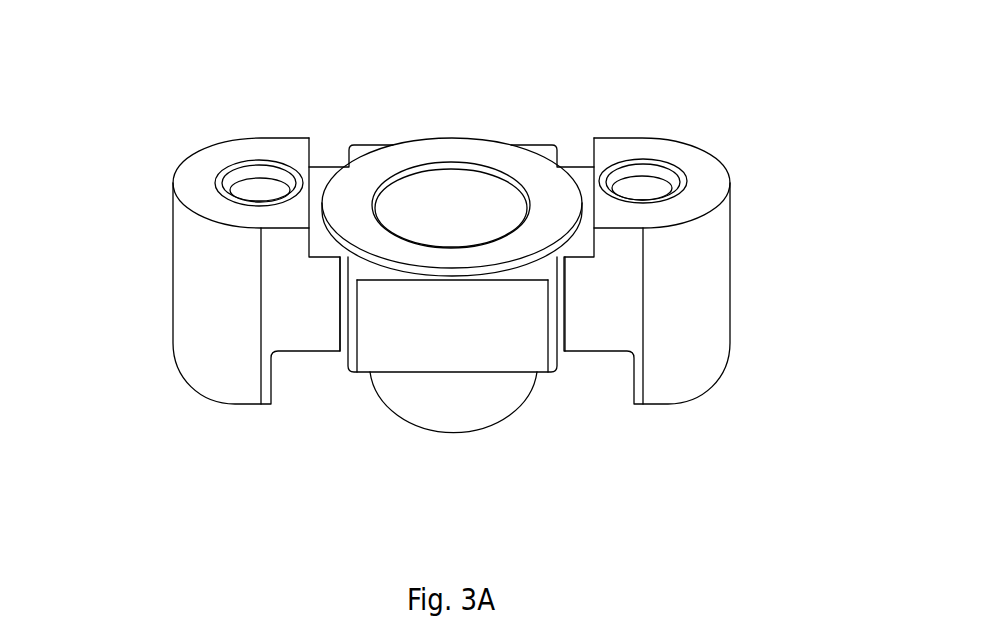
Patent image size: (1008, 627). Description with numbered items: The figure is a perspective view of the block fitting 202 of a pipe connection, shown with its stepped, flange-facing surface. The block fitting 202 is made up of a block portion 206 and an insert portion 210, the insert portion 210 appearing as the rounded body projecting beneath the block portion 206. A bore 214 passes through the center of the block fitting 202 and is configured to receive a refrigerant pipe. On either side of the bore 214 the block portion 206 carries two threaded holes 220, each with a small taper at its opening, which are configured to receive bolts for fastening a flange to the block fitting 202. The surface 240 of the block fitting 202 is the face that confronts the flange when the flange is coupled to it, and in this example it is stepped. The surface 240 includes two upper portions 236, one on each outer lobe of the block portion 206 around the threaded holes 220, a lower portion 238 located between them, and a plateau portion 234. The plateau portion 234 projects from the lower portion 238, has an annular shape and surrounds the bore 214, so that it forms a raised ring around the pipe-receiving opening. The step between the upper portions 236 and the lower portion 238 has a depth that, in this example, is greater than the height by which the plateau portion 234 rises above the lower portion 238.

The block fitting 202 is at (215, 278).
The block portion 206 is at (812, 207).
The insert portion 210 is at (432, 420).
The bore 214 is at (432, 187).
The threaded holes 220 is at (238, 185).
The plateau portion 234 is at (500, 162).
The upper portions 236 is at (290, 152).
The lower portion 238 is at (575, 243).
The surface 240 is at (582, 183).